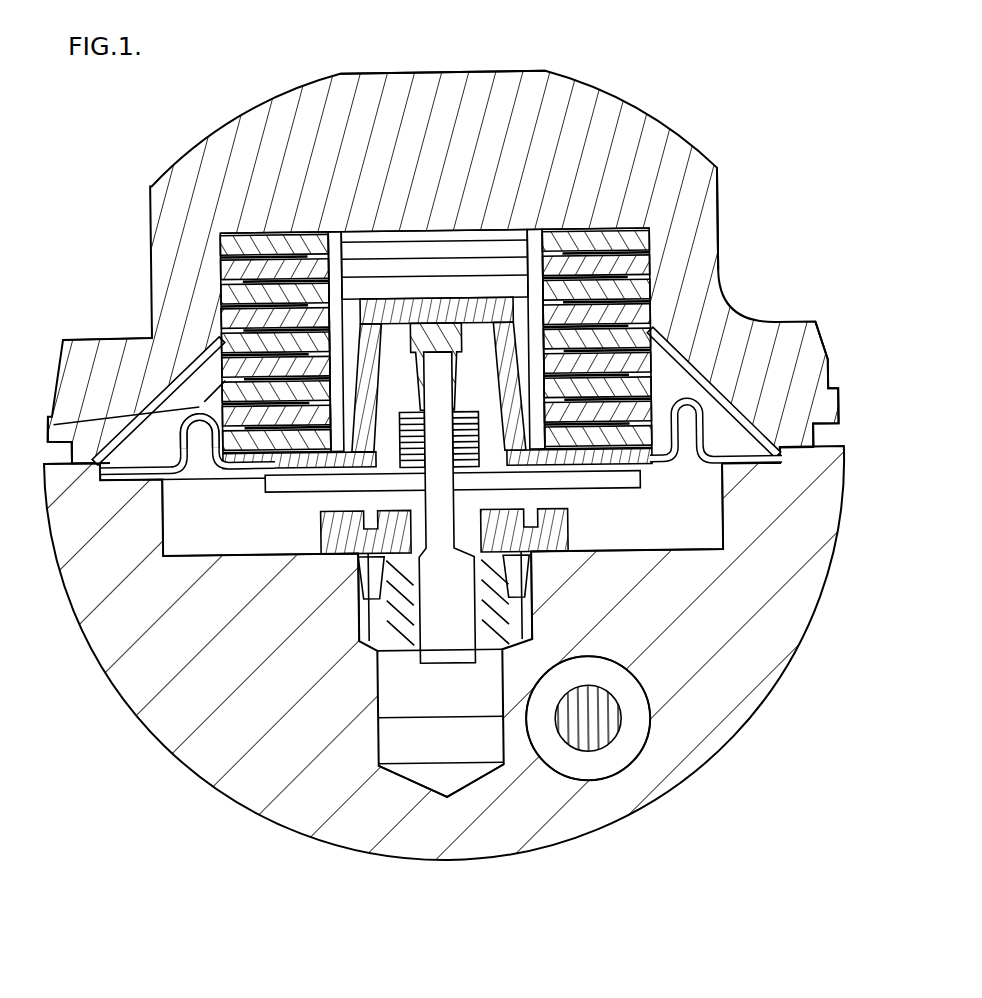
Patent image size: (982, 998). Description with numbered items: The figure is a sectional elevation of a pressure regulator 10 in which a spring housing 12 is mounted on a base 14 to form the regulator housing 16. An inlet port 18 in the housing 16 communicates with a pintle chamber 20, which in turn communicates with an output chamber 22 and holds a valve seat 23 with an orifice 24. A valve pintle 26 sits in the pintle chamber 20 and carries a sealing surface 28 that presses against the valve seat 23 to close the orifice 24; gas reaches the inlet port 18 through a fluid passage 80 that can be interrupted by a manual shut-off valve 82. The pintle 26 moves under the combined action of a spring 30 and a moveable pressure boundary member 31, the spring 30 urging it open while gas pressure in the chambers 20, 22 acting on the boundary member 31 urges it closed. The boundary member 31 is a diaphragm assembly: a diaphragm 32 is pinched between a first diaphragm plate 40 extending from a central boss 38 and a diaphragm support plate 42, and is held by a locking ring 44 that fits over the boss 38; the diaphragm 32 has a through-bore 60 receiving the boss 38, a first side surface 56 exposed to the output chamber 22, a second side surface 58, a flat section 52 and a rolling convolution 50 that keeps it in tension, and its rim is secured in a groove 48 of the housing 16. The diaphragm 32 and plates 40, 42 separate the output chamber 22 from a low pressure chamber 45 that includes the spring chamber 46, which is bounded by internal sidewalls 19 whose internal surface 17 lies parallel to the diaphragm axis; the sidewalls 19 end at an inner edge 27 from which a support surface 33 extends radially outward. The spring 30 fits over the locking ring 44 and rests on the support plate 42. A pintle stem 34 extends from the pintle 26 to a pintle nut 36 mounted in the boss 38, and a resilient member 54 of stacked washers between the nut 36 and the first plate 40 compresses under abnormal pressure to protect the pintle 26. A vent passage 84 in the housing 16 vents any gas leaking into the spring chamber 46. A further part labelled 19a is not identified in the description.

The pressure regulator 10 is at (481, 60).
The spring housing 12 is at (621, 110).
The base 14 is at (778, 675).
The regulator housing 16 is at (828, 340).
The internal surface 17 is at (652, 304).
The inlet port 18 is at (530, 770).
The internal sidewalls 19 is at (222, 296).
The stack end plate 19a is at (422, 228).
The pintle chamber 20 is at (390, 740).
The output chamber 22 is at (685, 533).
The valve seat 23 is at (395, 558).
The orifice 24 is at (417, 528).
The valve pintle 26 is at (440, 655).
The inner edge 27 is at (205, 398).
The sealing surface 28 is at (405, 652).
The spring 30 is at (222, 258).
The moveable pressure boundary member 31 is at (645, 487).
The diaphragm 32 is at (220, 470).
The support surface 33 is at (195, 388).
The pintle stem 34 is at (452, 527).
The pintle nut 36 is at (466, 298).
The central boss 38 is at (655, 344).
The first diaphragm plate 40 is at (290, 486).
The diaphragm support plate 42 is at (238, 478).
The locking ring 44 is at (535, 233).
The low pressure chamber 45 is at (215, 366).
The spring chamber 46 is at (527, 300).
The groove 48 is at (132, 486).
The rolling convolution 50 is at (200, 404).
The section 52 is at (258, 480).
The resilient member 54 is at (392, 281).
The first side surface 56 is at (205, 448).
The second side surface 58 is at (720, 346).
The through-bore 60 is at (322, 496).
The fluid passage 80 is at (644, 738).
The manual shut-off valve 82 is at (596, 745).
The vent passage 84 is at (200, 368).